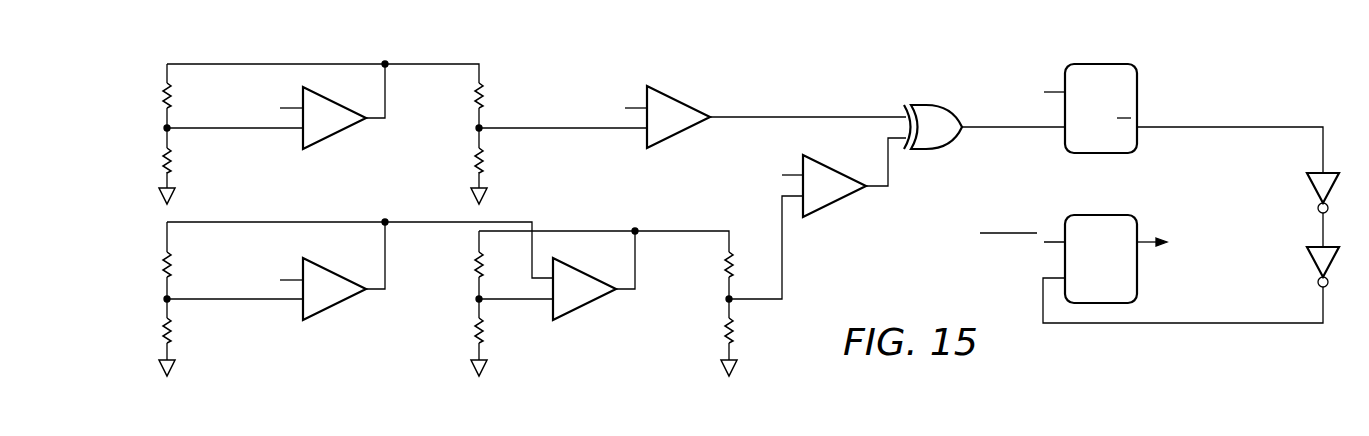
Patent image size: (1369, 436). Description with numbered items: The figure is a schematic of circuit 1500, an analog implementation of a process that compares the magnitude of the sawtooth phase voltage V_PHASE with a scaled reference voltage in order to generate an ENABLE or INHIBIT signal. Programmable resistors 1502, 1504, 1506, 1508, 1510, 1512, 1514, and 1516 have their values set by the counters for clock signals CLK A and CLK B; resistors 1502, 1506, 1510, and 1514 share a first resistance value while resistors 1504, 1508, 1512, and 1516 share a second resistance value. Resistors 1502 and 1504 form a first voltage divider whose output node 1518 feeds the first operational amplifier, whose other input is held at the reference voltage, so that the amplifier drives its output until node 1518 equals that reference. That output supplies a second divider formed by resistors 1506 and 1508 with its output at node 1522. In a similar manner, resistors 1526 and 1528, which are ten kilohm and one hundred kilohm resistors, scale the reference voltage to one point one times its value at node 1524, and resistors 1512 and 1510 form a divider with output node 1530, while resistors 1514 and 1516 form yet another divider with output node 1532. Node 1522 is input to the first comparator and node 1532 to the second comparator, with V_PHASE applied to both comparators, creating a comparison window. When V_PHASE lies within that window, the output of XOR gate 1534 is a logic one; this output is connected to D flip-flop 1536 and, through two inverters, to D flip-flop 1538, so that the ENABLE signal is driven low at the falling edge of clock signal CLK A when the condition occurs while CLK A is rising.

The circuit 1500 is at (1280, 97).
The programmable resistor 1502 is at (163, 165).
The programmable resistor 1504 is at (163, 93).
The programmable resistor 1506 is at (475, 93).
The programmable resistor 1508 is at (475, 165).
The programmable resistor 1510 is at (475, 338).
The programmable resistor 1512 is at (475, 263).
The programmable resistor 1514 is at (725, 263).
The programmable resistor 1516 is at (725, 338).
The output node 1518 is at (163, 127).
The node 1522 is at (475, 128).
The node 1524 is at (163, 300).
The resistor 1526 is at (163, 262).
The resistor 1528 is at (163, 338).
The node 1530 is at (475, 300).
The node 1532 is at (725, 300).
The XOR gate 1534 is at (942, 149).
The D flip-flop 1536 is at (1137, 104).
The D flip-flop 1538 is at (1100, 215).